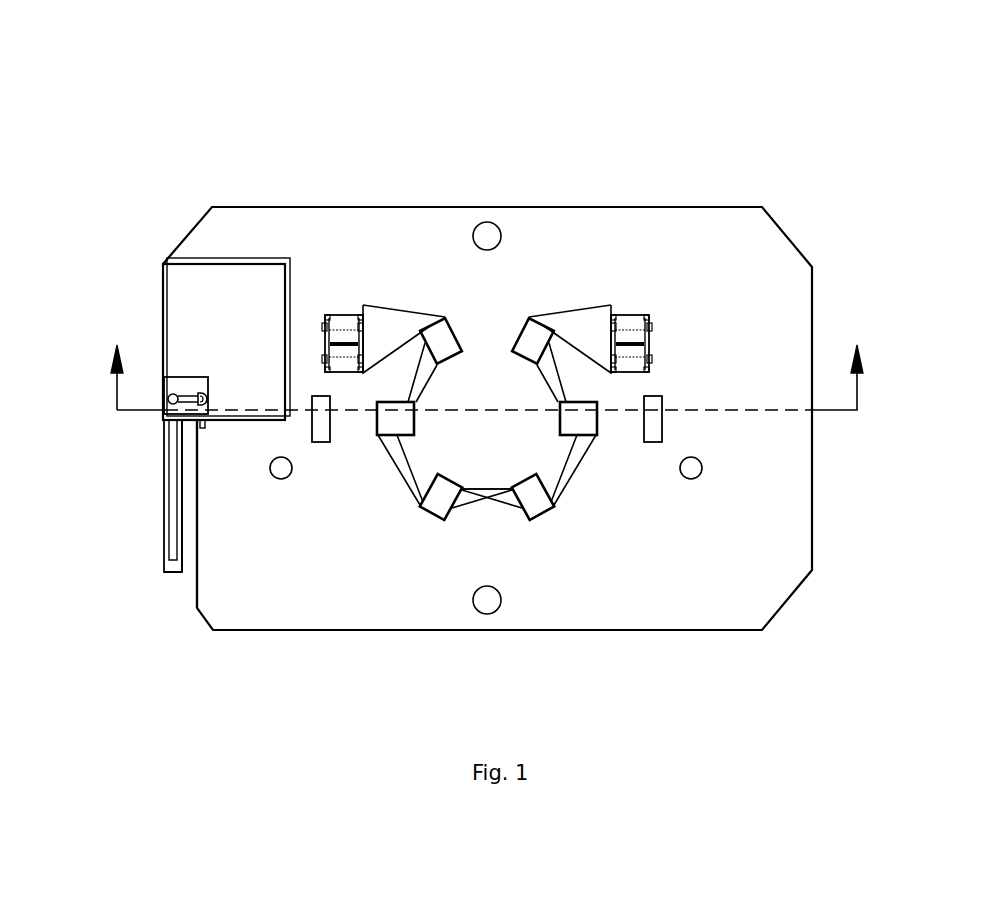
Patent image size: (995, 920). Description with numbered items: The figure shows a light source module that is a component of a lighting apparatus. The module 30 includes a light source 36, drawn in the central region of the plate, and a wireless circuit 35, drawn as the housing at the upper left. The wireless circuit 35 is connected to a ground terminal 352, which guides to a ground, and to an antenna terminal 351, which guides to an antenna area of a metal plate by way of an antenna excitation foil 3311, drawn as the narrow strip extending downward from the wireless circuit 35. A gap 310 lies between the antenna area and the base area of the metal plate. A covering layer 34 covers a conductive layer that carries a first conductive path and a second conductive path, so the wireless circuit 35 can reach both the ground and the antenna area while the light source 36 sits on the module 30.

The module 30 is at (494, 47).
The covering layer 34 is at (628, 587).
The wireless circuit 35 is at (256, 278).
The antenna terminal 351 is at (168, 395).
The ground terminal 352 is at (206, 376).
The light source 36 is at (532, 343).
The gap 310 is at (188, 547).
The antenna excitation foil 3311 is at (172, 521).